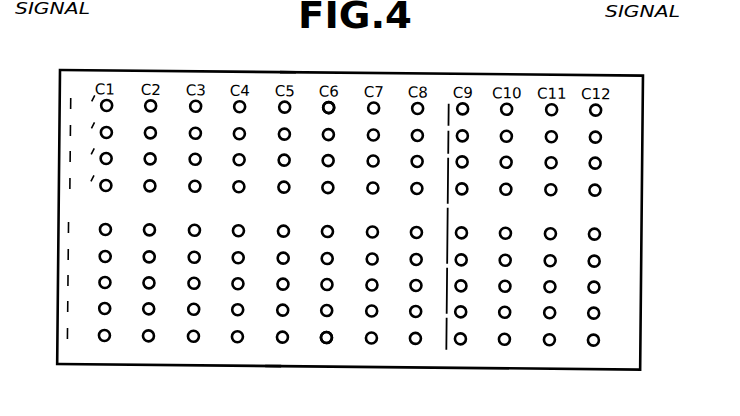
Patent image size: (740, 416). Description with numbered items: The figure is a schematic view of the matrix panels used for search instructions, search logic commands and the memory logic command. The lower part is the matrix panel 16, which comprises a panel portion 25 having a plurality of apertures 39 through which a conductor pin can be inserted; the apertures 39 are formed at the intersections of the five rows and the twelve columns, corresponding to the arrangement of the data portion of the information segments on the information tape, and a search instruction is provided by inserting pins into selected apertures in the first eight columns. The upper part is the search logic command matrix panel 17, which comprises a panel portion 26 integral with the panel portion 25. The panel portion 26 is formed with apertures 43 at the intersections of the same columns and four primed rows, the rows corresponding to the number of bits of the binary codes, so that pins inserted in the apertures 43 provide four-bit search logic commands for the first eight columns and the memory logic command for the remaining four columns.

The matrix panel 16 is at (58, 221).
The search logic command matrix panel 17 is at (58, 98).
The panel portion 25 is at (276, 357).
The panel portion 26 is at (288, 72).
The apertures 39 is at (330, 341).
The apertures 43 is at (335, 102).